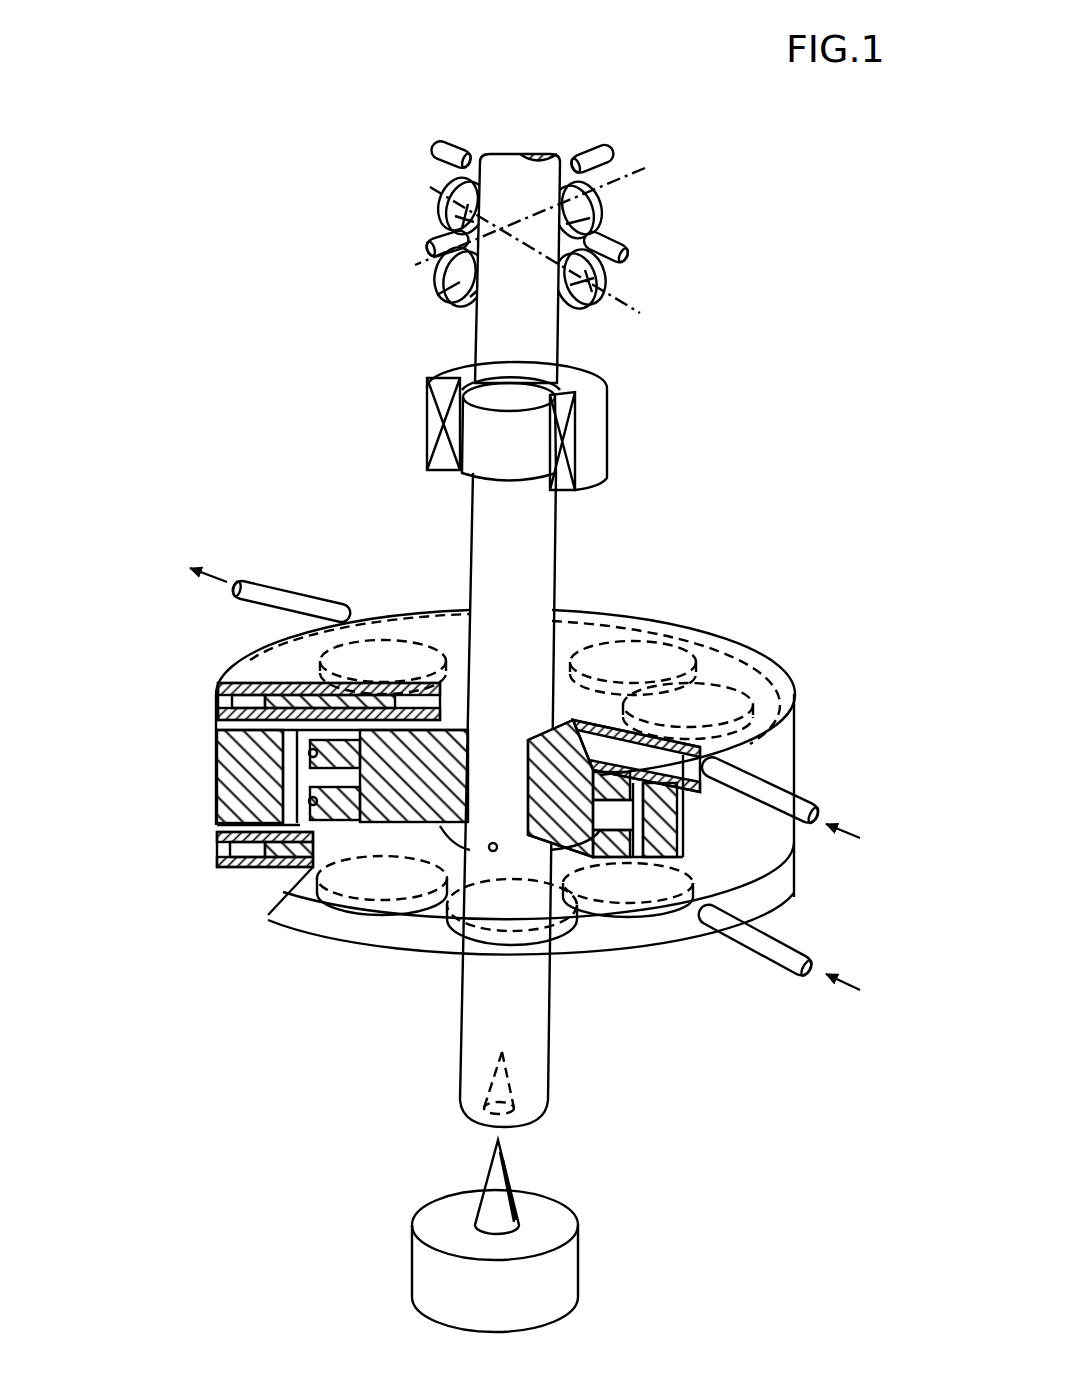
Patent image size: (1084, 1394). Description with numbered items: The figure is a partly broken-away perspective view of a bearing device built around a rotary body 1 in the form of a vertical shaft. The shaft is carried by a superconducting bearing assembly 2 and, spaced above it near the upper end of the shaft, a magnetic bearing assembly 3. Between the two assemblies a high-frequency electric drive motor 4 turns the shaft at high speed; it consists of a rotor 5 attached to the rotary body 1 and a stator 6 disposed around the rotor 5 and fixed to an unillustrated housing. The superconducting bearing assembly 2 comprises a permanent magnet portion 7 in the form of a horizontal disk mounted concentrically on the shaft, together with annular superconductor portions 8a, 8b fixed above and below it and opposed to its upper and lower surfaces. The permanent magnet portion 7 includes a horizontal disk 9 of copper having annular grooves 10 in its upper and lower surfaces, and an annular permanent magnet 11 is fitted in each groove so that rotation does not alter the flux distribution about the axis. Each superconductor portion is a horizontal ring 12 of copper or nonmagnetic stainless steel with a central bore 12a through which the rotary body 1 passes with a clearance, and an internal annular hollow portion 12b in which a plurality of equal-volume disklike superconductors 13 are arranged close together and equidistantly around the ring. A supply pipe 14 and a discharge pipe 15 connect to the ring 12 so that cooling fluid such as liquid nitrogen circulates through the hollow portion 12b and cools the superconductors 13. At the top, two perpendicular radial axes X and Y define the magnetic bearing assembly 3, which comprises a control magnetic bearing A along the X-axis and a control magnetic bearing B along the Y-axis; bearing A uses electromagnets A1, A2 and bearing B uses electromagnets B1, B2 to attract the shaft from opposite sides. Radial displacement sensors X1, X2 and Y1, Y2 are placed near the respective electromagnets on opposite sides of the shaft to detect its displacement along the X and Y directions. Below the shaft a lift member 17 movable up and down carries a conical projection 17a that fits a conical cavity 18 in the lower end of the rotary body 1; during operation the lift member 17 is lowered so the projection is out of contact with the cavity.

The rotary body 1 is at (507, 172).
The superconducting bearing assembly 2 is at (544, 764).
The magnetic bearing assembly 3 is at (518, 212).
The high-frequency electric drive motor 4 is at (484, 385).
The rotor 5 is at (483, 421).
The stator 6 is at (472, 355).
The permanent magnet portion 7 is at (245, 770).
The annular superconductor portion 8a is at (797, 713).
The annular superconductor portion 8b is at (780, 873).
The horizontal disk 9 is at (460, 745).
The annular grooves 10 is at (308, 736).
The annular permanent magnet 11 is at (680, 834).
The horizontal ring 12 is at (228, 697).
The bore 12a is at (563, 700).
The annular hollow portion 12b is at (257, 697).
The disklike superconductors 13 is at (733, 687).
The supply pipe 14 is at (812, 802).
The discharge pipe 15 is at (270, 590).
The lift member 17 is at (425, 1262).
The conical projection 17a is at (495, 1180).
The conical cavity 18 is at (510, 1117).
The control magnetic bearing A is at (580, 302).
The control magnetic bearing B is at (437, 270).
The electromagnet A1 is at (440, 180).
The electromagnet A2 is at (598, 278).
The electromagnet B1 is at (478, 294).
The electromagnet B2 is at (605, 185).
The X-axis X is at (425, 182).
The Y-axis Y is at (640, 172).
The radial displacement sensor X1 is at (455, 140).
The radial displacement sensor X2 is at (630, 253).
The radial displacement sensor Y1 is at (437, 234).
The radial displacement sensor Y2 is at (593, 150).